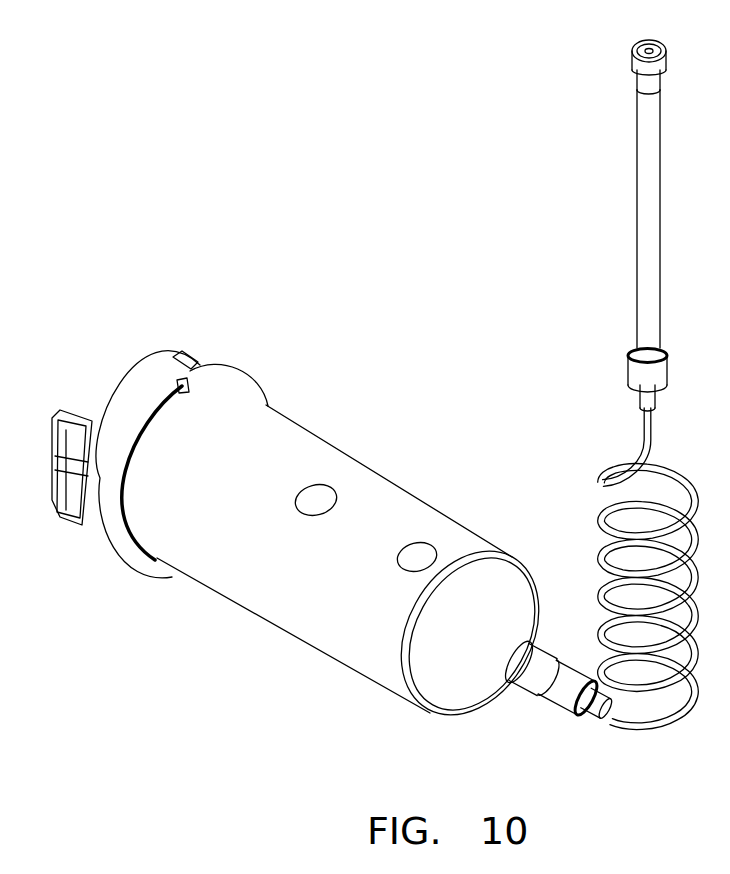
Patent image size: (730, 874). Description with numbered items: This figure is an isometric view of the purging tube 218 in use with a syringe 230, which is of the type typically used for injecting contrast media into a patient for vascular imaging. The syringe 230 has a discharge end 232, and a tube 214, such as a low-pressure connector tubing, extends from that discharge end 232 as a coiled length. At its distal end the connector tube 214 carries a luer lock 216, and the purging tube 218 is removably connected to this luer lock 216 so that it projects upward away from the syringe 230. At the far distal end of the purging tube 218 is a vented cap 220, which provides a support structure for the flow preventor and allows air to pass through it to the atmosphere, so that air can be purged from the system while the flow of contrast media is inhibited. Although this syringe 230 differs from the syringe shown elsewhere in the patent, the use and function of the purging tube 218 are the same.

The tube 214 is at (602, 503).
The luer lock 216 is at (631, 357).
The purging tube 218 is at (642, 203).
The vented cap 220 is at (637, 67).
The syringe 230 is at (343, 474).
The discharge end 232 is at (581, 687).